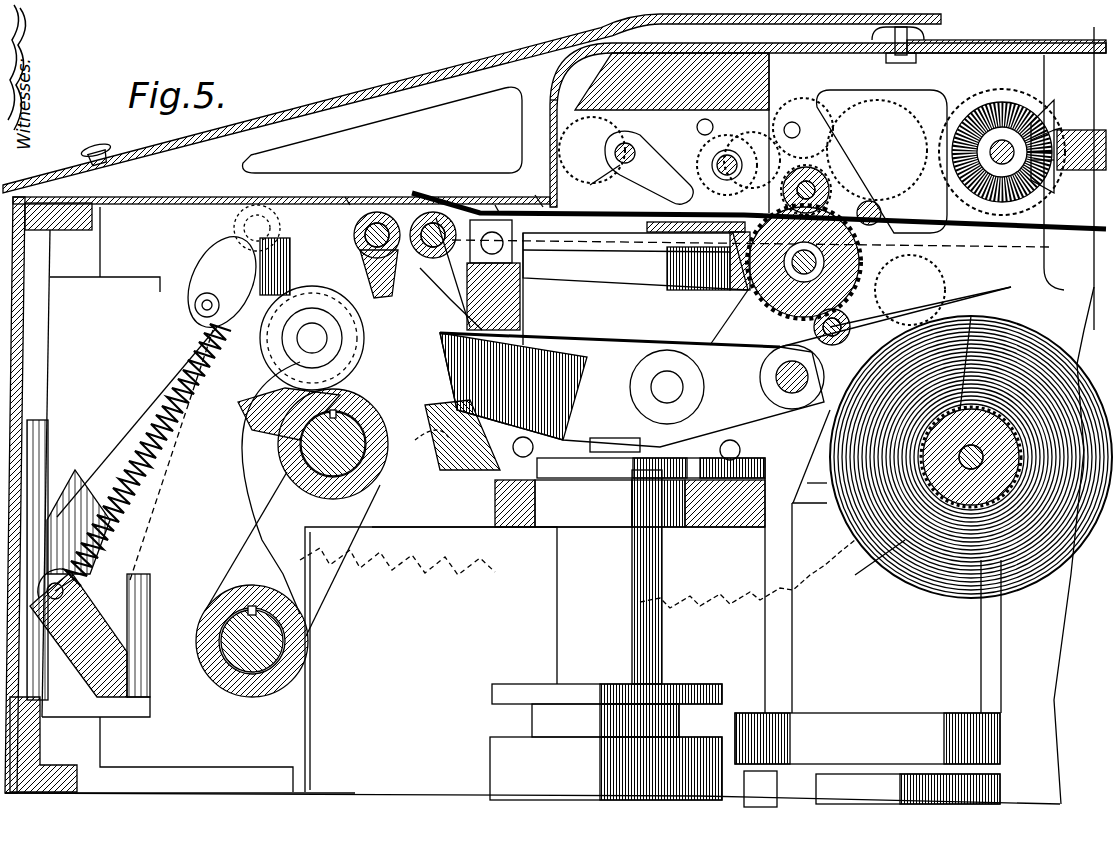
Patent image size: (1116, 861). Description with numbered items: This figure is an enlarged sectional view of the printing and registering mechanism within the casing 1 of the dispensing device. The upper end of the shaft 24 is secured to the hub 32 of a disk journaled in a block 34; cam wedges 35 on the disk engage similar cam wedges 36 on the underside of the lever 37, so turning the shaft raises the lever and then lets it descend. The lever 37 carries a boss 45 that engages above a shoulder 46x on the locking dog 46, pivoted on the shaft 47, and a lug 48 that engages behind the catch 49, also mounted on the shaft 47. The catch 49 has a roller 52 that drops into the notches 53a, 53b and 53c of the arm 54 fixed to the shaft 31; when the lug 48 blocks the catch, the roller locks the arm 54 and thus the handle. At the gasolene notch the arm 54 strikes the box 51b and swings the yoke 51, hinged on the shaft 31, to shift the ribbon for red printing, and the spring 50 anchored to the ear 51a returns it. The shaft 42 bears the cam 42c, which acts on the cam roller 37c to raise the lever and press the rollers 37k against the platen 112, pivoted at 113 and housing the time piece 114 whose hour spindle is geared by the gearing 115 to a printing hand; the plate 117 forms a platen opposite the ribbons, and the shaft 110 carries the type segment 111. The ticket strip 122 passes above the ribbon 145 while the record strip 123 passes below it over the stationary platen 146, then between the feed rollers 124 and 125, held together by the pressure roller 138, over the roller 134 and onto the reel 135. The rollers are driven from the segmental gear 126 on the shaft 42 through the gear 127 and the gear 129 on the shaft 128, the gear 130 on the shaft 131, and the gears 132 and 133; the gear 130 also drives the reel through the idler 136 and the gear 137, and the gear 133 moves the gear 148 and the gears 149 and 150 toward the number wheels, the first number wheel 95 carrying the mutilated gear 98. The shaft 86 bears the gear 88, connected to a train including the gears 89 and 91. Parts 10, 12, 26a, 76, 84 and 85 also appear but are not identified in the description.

The casing 1 is at (342, 193).
The frame 10 is at (552, 130).
The side plate 12 is at (489, 200).
The shaft 24 is at (557, 605).
The base plate 26a is at (213, 773).
The shaft 31 is at (248, 697).
The hub 32 is at (568, 503).
The block 34 is at (728, 527).
The cam wedges 35 is at (705, 385).
The cam wedges 36 is at (615, 435).
The lever 37 is at (548, 345).
The cam roller 37c is at (316, 324).
The rollers 37k is at (775, 380).
The shaft 42 is at (345, 493).
The cam 42c is at (290, 440).
The boss 45 is at (289, 266).
The locking dog 46 is at (451, 274).
The shoulder 46x is at (422, 447).
The shaft 47 is at (383, 198).
The lug 48 is at (462, 411).
The catch 49 is at (352, 220).
The spring 50 is at (120, 430).
The yoke 51 is at (97, 458).
The ear 51a is at (78, 633).
The box 51b is at (110, 620).
The roller 52 is at (222, 282).
The notch 53a is at (262, 338).
The notch 53b is at (284, 350).
The notch 53c is at (323, 345).
The arm 54 is at (240, 525).
The gear 76 is at (757, 160).
The pawl pin 84 is at (1058, 135).
The pawl 85 is at (1040, 112).
The shaft 86 is at (1000, 165).
The gear 88 is at (1002, 139).
The gear 89 is at (915, 290).
The gear 91 is at (837, 187).
The first number wheel 95 is at (560, 115).
The mutilated gear 98 is at (722, 158).
The shaft 110 is at (612, 153).
The type segment 111 is at (592, 182).
The platen 112 is at (467, 262).
The pivot 113 is at (491, 241).
The time piece 114 is at (628, 262).
The gearing 115 is at (707, 256).
The plate 117 is at (649, 167).
The ticket strip 122 is at (459, 200).
The record strip 123 is at (1082, 172).
The feed roller 124 is at (821, 262).
The feed roller 125 is at (831, 190).
The segmental gear 126 is at (397, 561).
The gear 127 is at (535, 522).
The shaft 128 is at (651, 470).
The gear 129 is at (583, 518).
The gear 130 is at (745, 638).
The shaft 131 is at (740, 450).
The gear 132 is at (849, 320).
The gear 133 is at (838, 148).
The roller 134 is at (416, 195).
The reel 135 is at (768, 462).
The idler 136 is at (1025, 345).
The gear 137 is at (1079, 311).
The pressure roller 138 is at (845, 322).
The ribbon 145 is at (527, 192).
The stationary platen 146 is at (530, 270).
The gear 148 is at (796, 110).
The gear 149 is at (925, 44).
The gear 150 is at (690, 60).